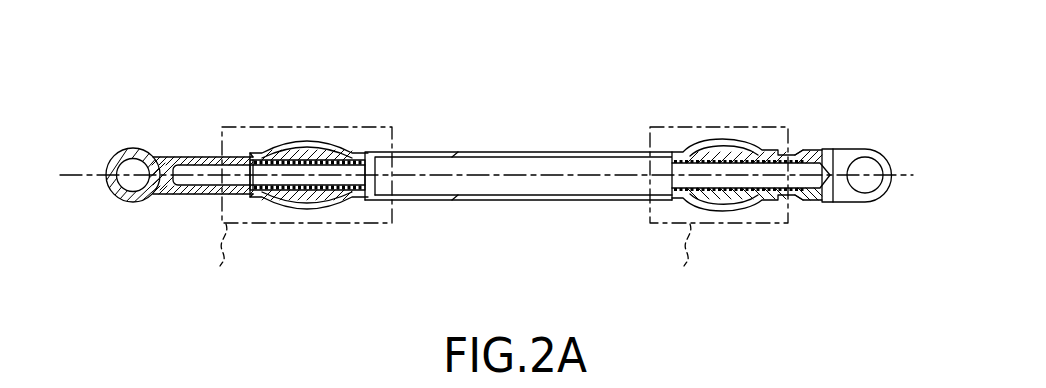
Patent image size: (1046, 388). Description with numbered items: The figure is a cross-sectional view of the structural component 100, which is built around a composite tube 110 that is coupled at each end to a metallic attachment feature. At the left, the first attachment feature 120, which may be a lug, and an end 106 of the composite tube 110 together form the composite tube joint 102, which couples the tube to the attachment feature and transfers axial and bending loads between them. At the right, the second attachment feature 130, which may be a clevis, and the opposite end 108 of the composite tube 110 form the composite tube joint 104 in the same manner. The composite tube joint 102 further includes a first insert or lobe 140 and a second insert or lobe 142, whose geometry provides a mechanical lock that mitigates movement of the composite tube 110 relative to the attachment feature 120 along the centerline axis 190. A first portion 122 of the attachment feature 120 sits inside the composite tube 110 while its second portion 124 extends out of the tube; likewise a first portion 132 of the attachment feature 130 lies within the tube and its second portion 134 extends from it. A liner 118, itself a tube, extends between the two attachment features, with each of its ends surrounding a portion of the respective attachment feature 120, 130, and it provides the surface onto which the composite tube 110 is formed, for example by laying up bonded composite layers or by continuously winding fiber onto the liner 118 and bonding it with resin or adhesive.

The structural component 100 is at (637, 98).
The composite tube joint 102 is at (260, 121).
The composite tube joint 104 is at (765, 112).
The end of composite tube 106 is at (309, 159).
The end of composite tube 108 is at (751, 222).
The composite tube 110 is at (518, 162).
The liner 118 is at (587, 200).
The first attachment feature 120 is at (157, 156).
The first portion of attachment feature 122 is at (298, 191).
The second portion of attachment feature 124 is at (183, 195).
The second attachment feature 130 is at (817, 150).
The first portion of attachment feature 132 is at (742, 195).
The second portion of attachment feature 134 is at (815, 200).
The first insert 140 is at (310, 152).
The second insert 142 is at (312, 198).
The centerline axis 190 is at (104, 187).